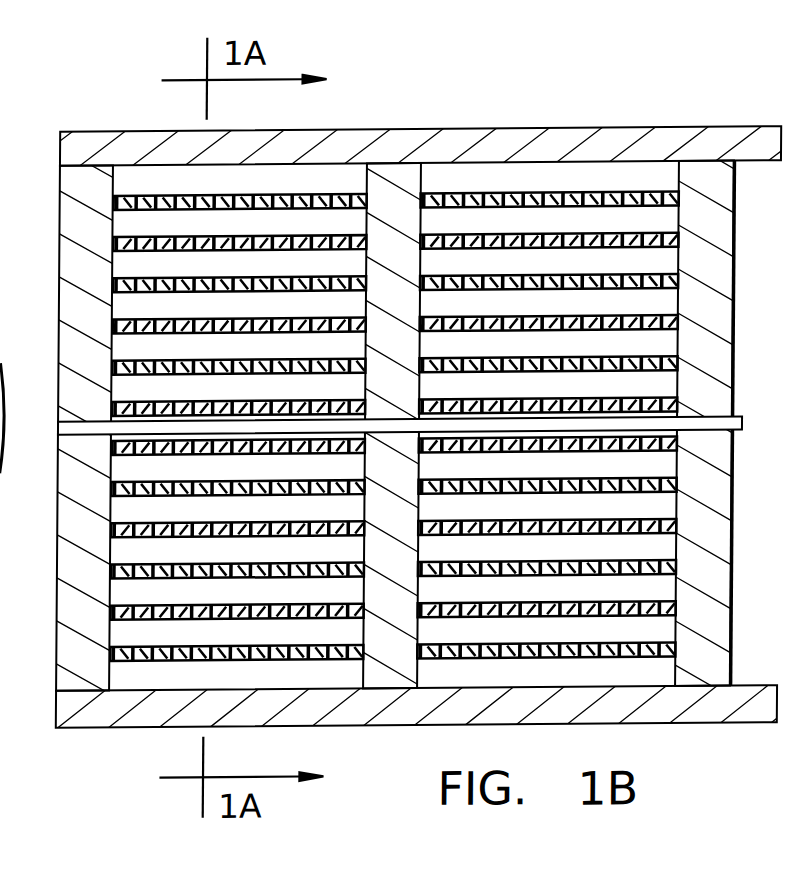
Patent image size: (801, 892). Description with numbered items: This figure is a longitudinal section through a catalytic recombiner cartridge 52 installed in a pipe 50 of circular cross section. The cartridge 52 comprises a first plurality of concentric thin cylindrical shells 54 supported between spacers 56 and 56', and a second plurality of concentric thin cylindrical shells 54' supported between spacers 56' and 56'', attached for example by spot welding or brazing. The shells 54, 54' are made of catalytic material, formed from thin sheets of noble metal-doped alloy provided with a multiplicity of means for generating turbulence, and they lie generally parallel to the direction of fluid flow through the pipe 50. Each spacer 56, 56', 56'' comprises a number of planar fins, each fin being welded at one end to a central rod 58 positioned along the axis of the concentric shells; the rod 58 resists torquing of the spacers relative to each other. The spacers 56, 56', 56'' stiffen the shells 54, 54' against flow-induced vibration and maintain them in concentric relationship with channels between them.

The pipe 50 is at (531, 141).
The catalytic recombiner cartridge 52 is at (742, 266).
The first plurality of concentric thin cylindrical shells 54 is at (186, 428).
The second plurality of concentric thin cylindrical shells 54' is at (601, 425).
The spacer 56 is at (115, 391).
The spacer 56' is at (423, 380).
The spacer 56'' is at (687, 382).
The central rod 58 is at (525, 427).